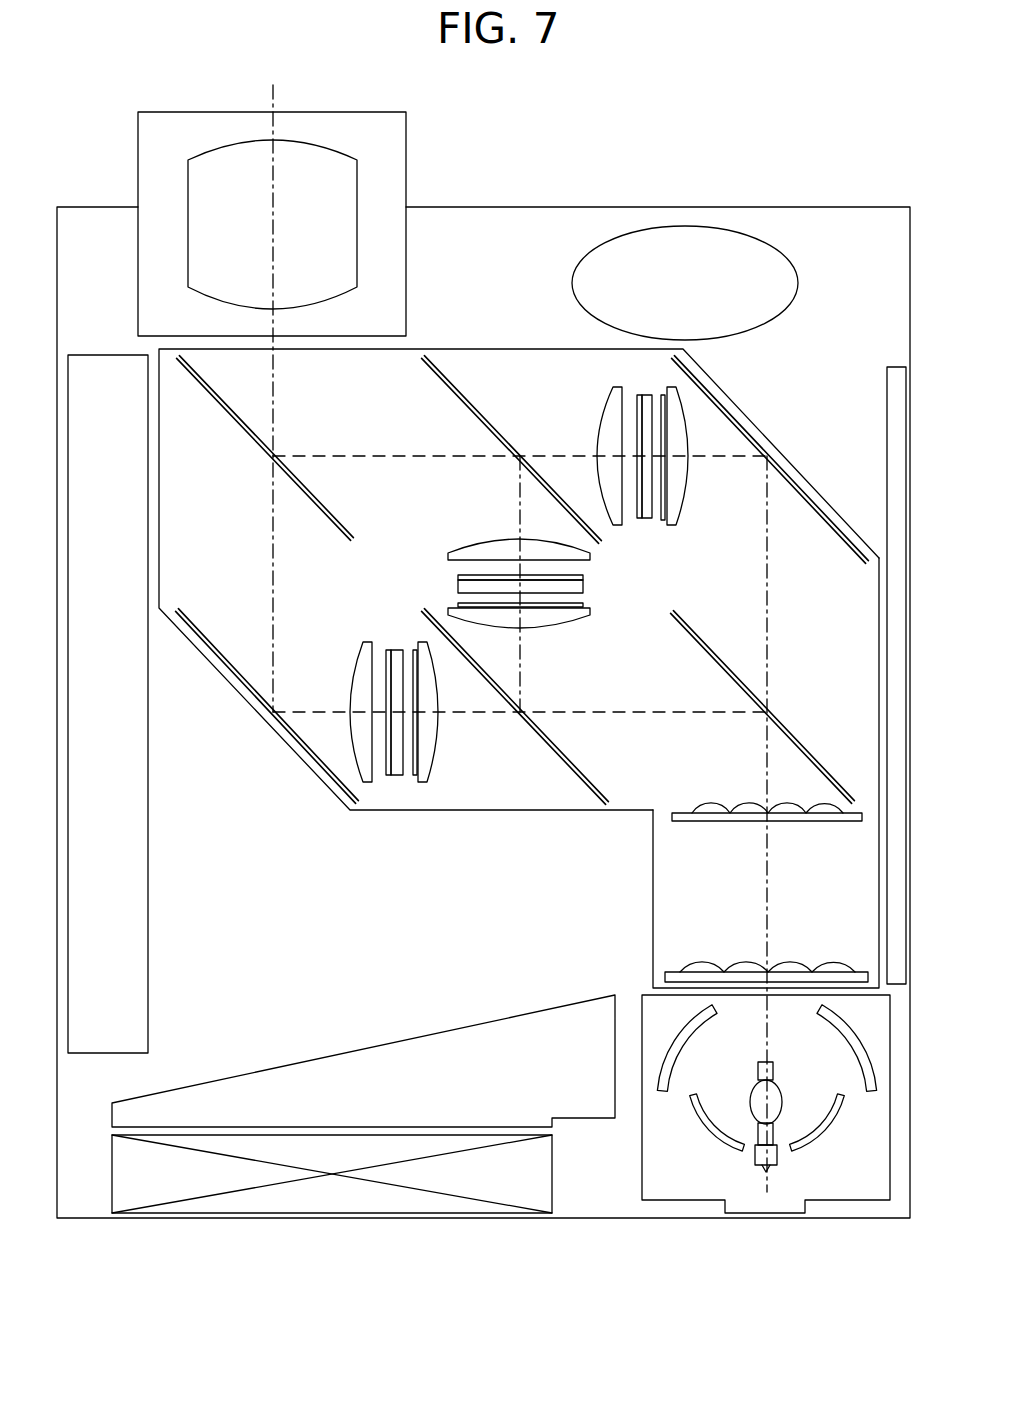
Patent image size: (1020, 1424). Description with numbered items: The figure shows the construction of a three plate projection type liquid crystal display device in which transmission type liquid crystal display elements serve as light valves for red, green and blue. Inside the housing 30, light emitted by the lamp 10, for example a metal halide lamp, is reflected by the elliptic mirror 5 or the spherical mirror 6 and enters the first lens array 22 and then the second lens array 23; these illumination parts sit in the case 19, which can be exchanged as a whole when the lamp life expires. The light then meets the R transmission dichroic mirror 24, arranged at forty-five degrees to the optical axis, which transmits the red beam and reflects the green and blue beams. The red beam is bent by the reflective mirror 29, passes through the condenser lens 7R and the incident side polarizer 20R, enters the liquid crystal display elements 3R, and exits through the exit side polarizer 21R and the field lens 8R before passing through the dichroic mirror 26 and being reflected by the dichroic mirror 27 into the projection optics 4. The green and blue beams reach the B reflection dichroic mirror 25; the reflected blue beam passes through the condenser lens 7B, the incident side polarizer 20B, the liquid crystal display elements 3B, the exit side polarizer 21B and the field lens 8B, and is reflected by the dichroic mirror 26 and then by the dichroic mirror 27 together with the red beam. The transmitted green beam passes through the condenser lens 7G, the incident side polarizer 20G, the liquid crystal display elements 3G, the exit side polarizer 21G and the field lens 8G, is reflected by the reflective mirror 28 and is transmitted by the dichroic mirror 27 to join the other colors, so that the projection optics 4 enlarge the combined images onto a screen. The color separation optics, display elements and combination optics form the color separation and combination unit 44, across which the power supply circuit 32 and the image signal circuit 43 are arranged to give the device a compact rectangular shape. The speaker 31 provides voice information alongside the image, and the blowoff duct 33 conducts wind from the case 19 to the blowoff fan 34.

The projection optics 4 is at (357, 187).
The housing 30 is at (826, 206).
The speaker 31 is at (786, 278).
The image signal circuit 43 is at (888, 402).
The color separation and combination unit 44 is at (653, 896).
The dichroic mirror 27 is at (228, 413).
The dichroic mirror 26 is at (465, 408).
The reflective mirror 29 is at (826, 524).
The reflective mirror 28 is at (220, 650).
The B reflection dichroic mirror 25 is at (574, 767).
The R transmission dichroic mirror 24 is at (812, 756).
The field lens 8R is at (605, 437).
The exit side polarizer 21R is at (637, 520).
The liquid crystal display elements 3R is at (638, 395).
The incident side polarizer 20R is at (664, 521).
The condenser lens 7R is at (677, 466).
The field lens 8B is at (496, 545).
The exit side polarizer 21B is at (460, 577).
The liquid crystal display elements 3B is at (578, 587).
The incident side polarizer 20B is at (460, 604).
The condenser lens 7B is at (535, 625).
The field lens 8G is at (357, 683).
The exit side polarizer 21G is at (388, 778).
The liquid crystal display elements 3G is at (398, 652).
The incident side polarizer 20G is at (414, 778).
The condenser lens 7G is at (434, 735).
The second lens array 23 is at (706, 822).
The first lens array 22 is at (830, 972).
The case 19 is at (830, 1200).
The spherical mirror 6 is at (688, 1037).
The elliptic mirror 5 is at (818, 1128).
The lamp 10 is at (755, 1160).
The power supply circuit 32 is at (125, 985).
The blowoff duct 33 is at (430, 1050).
The blowoff fan 34 is at (345, 1198).